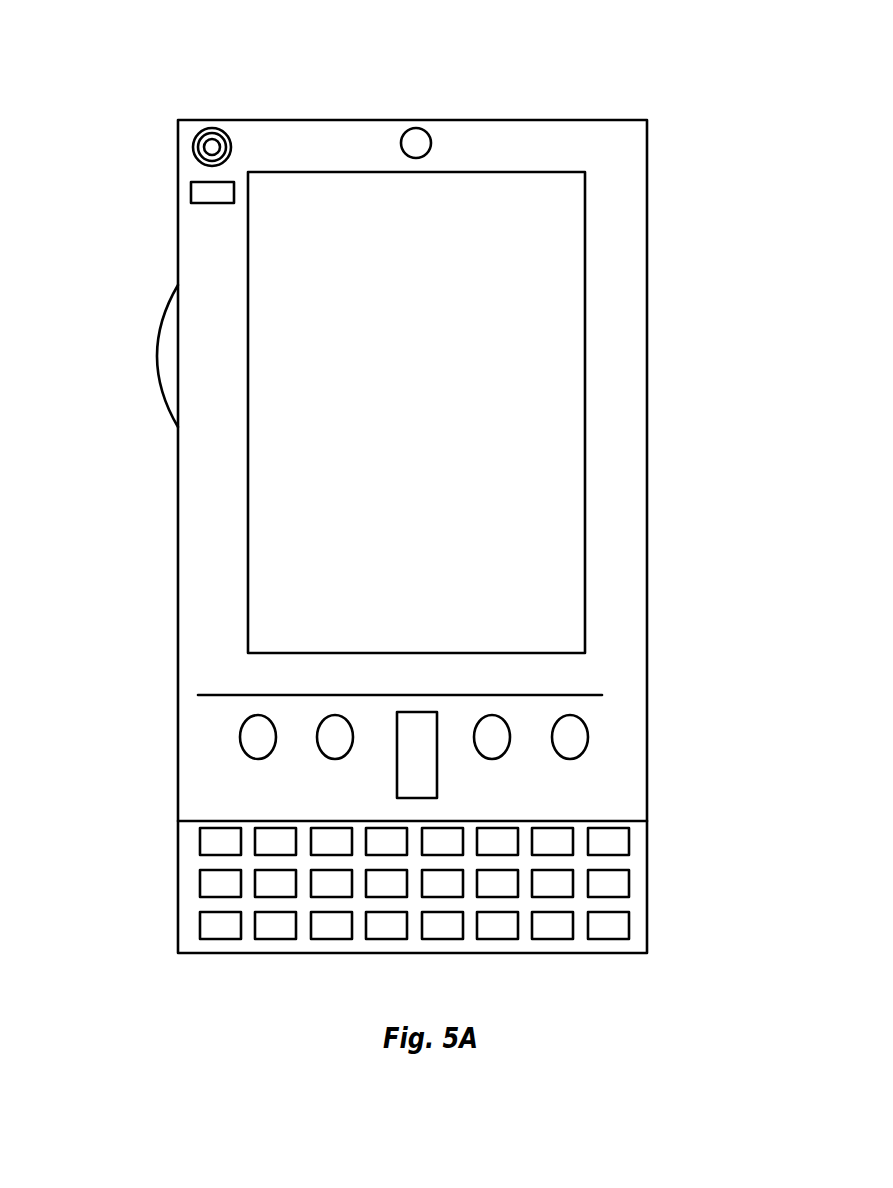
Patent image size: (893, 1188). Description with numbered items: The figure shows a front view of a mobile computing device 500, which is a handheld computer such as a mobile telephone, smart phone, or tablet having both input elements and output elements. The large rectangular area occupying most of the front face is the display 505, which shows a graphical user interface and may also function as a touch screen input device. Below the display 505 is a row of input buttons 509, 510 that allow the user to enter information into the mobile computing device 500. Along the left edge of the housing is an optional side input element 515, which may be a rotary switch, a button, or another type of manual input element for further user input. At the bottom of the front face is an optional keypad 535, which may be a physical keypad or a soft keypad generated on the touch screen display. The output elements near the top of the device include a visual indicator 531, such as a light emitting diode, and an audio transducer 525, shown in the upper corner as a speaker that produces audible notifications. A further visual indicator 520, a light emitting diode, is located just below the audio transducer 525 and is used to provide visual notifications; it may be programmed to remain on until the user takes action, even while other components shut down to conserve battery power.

The mobile computing device 500 is at (635, 138).
The display 505 is at (353, 572).
The input buttons 509 is at (416, 760).
The input button 510 is at (568, 732).
The side input element 515 is at (168, 357).
The visual indicator 520 is at (192, 197).
The audio transducer 525 is at (192, 147).
The visual indicator 531 is at (428, 140).
The keypad 535 is at (187, 928).